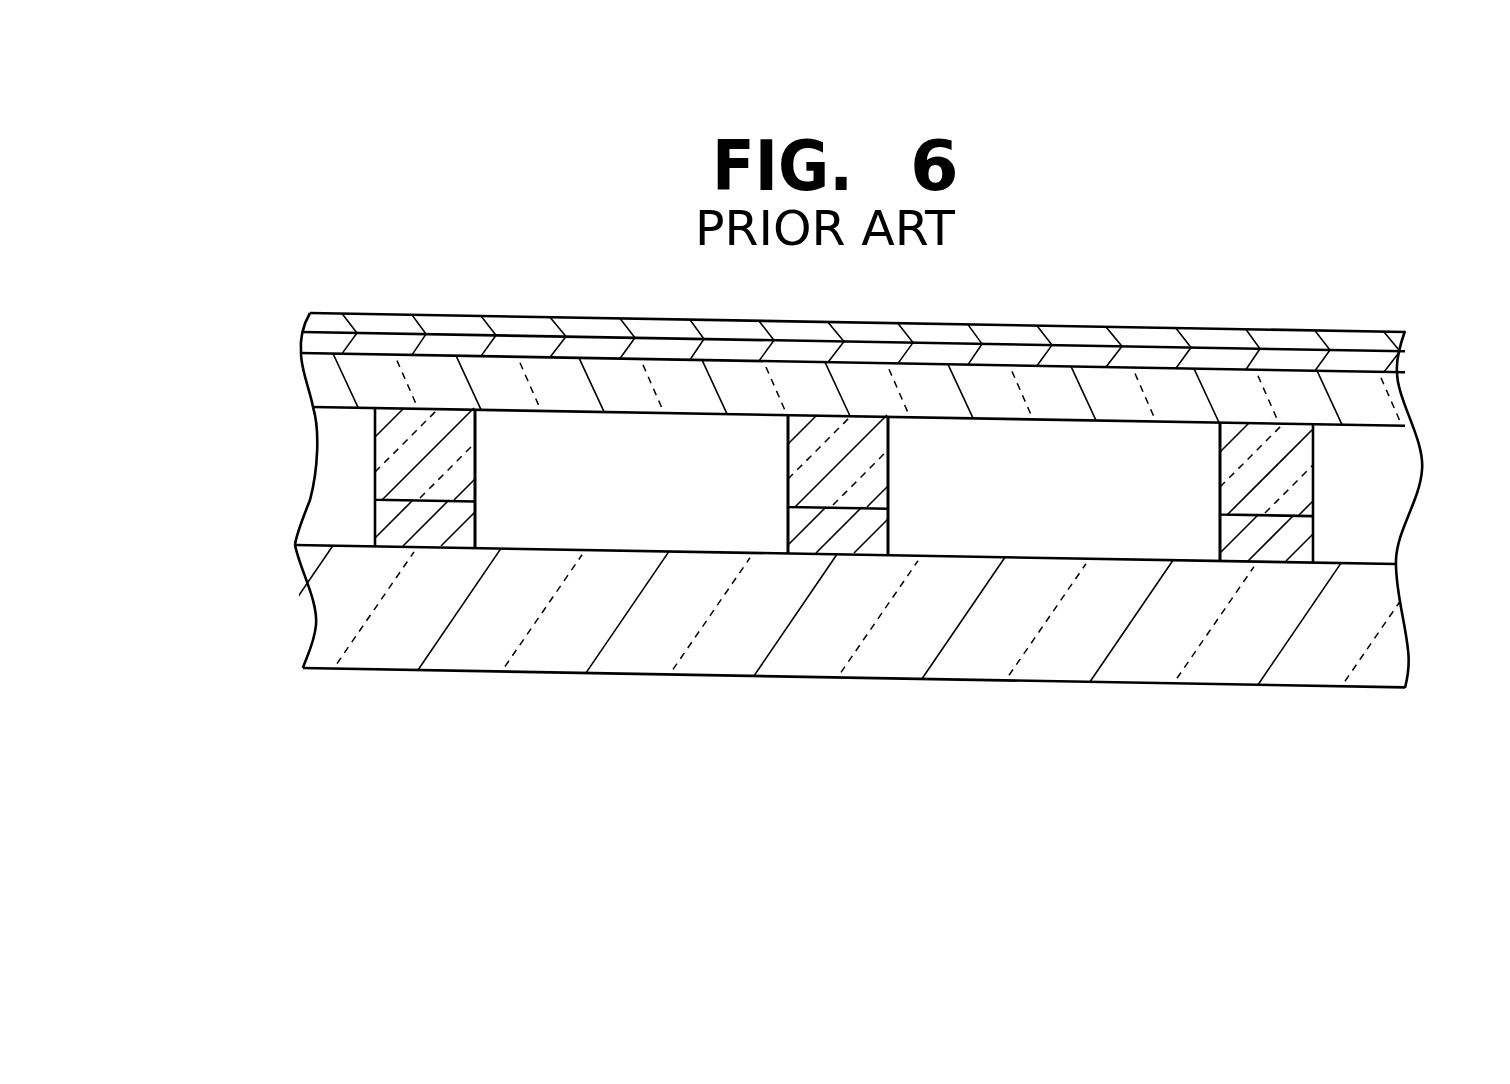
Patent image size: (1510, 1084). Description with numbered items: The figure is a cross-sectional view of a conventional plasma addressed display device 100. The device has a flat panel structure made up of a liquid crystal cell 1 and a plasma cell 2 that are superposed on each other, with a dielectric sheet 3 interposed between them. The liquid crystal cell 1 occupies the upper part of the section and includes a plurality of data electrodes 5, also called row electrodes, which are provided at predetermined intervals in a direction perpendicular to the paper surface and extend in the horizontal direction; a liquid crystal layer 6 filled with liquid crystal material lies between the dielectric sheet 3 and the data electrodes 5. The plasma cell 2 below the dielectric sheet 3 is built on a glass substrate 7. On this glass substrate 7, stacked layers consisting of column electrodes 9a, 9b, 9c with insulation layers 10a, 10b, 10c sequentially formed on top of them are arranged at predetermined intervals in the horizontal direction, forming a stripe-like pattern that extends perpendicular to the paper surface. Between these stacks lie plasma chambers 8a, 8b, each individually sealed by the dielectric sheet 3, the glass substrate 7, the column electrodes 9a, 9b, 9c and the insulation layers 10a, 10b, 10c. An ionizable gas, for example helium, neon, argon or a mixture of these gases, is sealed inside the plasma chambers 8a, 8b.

The plasma addressed display device 100 is at (1437, 132).
The liquid crystal cell 1 is at (170, 295).
The plasma cell 2 is at (297, 405).
The dielectric sheet 3 is at (322, 388).
The data electrodes 5 is at (315, 320).
The liquid crystal layer 6 is at (307, 342).
The glass substrate 7 is at (464, 655).
The plasma chamber 8a is at (712, 518).
The plasma chamber 8b is at (1170, 530).
The column electrode 9a is at (470, 517).
The column electrode 9b is at (877, 525).
The column electrode 9c is at (1307, 540).
The insulation layer 10a is at (460, 437).
The insulation layer 10b is at (877, 443).
The insulation layer 10c is at (1307, 453).